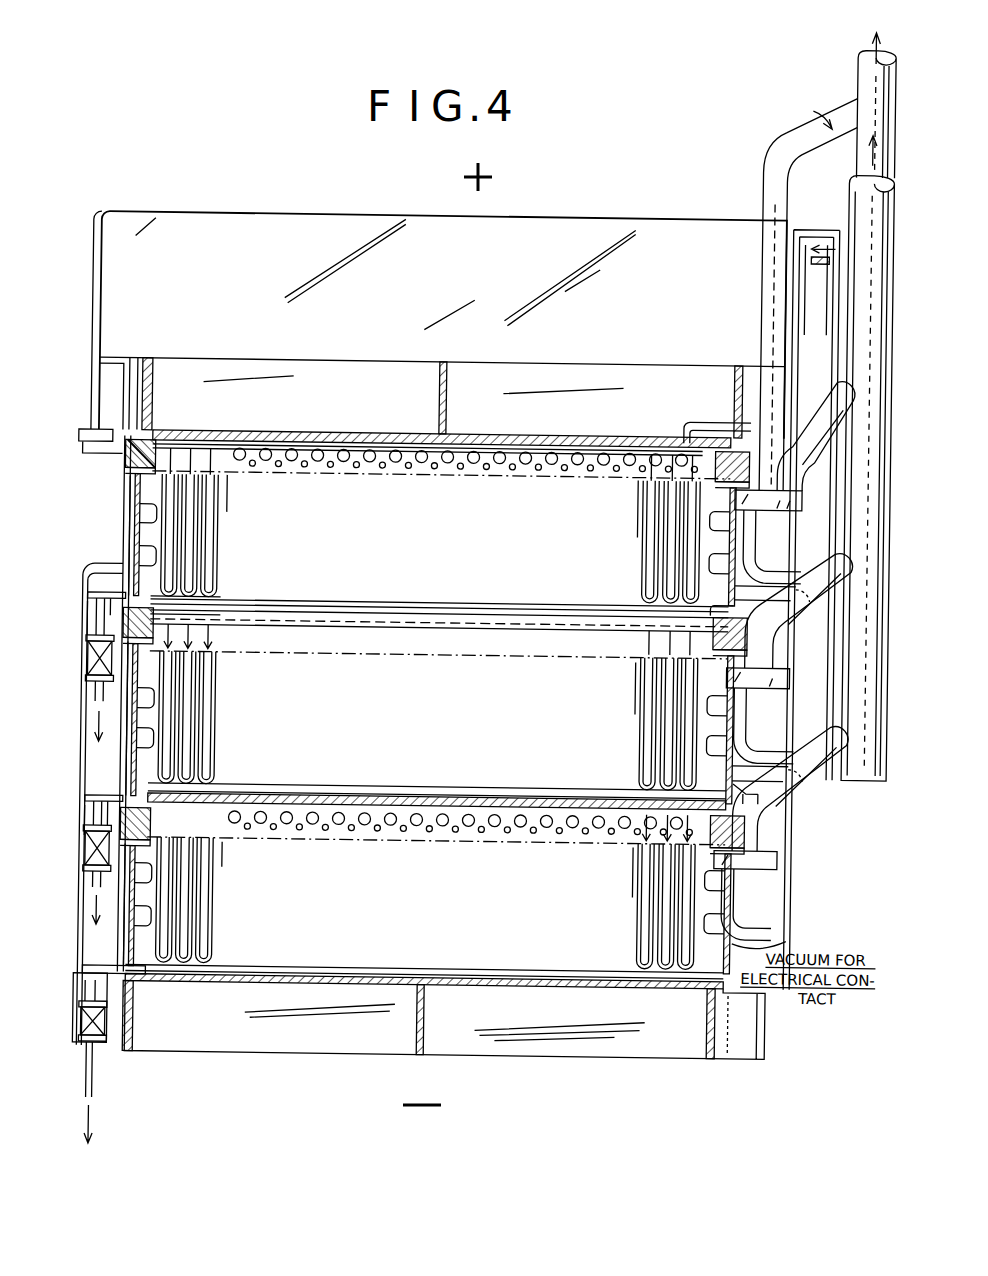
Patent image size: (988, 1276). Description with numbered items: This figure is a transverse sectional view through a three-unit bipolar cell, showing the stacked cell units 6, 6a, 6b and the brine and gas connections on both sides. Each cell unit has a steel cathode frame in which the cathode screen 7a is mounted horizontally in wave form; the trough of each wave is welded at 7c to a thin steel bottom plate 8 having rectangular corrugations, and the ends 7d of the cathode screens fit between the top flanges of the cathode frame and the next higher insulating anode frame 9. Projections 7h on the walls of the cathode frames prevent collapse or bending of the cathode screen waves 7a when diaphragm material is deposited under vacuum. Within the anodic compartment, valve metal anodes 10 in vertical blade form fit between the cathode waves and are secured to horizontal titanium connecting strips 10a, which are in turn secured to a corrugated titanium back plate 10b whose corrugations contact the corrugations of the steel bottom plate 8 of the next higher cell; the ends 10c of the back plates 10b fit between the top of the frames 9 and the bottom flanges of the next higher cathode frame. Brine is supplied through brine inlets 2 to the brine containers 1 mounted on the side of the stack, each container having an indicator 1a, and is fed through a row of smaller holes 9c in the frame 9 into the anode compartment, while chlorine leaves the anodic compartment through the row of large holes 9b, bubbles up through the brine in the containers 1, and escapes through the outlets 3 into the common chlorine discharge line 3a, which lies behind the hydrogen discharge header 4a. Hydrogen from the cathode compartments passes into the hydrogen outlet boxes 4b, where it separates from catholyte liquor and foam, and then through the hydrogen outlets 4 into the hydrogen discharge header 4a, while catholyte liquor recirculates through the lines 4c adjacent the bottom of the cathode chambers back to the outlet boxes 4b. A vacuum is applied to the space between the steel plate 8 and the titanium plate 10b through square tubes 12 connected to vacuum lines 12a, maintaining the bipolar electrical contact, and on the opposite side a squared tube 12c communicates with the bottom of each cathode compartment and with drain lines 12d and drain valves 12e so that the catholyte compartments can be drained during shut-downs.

The brine container 1 is at (315, 224).
The indicator 1a is at (812, 327).
The brine inlet 2 is at (814, 260).
The chlorine outlet 3 is at (782, 180).
The chlorine discharge line 3a is at (846, 72).
The hydrogen outlet 4 is at (832, 400).
The hydrogen discharge header 4a is at (872, 331).
The hydrogen outlet box 4b is at (790, 500).
The recirculation line 4c is at (762, 900).
The cell unit 6 is at (120, 516).
The cell unit 6a is at (119, 752).
The cell unit 6b is at (119, 937).
The cathode screen 7a is at (641, 746).
The weld 7c is at (216, 604).
The cathode screen ends 7d is at (166, 468).
The projections 7h is at (150, 560).
The steel bottom plate 8 is at (322, 603).
The insulating anode frame 9 is at (138, 462).
The large holes 9b is at (345, 818).
The smaller holes 9c is at (410, 818).
The valve metal anode 10 is at (648, 546).
The titanium connecting strip 10a is at (638, 830).
The corrugated titanium back plate 10b is at (437, 463).
The back plate ends 10c is at (208, 618).
The square tube 12 is at (704, 990).
The vacuum line 12a is at (718, 436).
The squared drain tube 12c is at (140, 598).
The drain line 12d is at (88, 655).
The drain valve 12e is at (88, 1050).